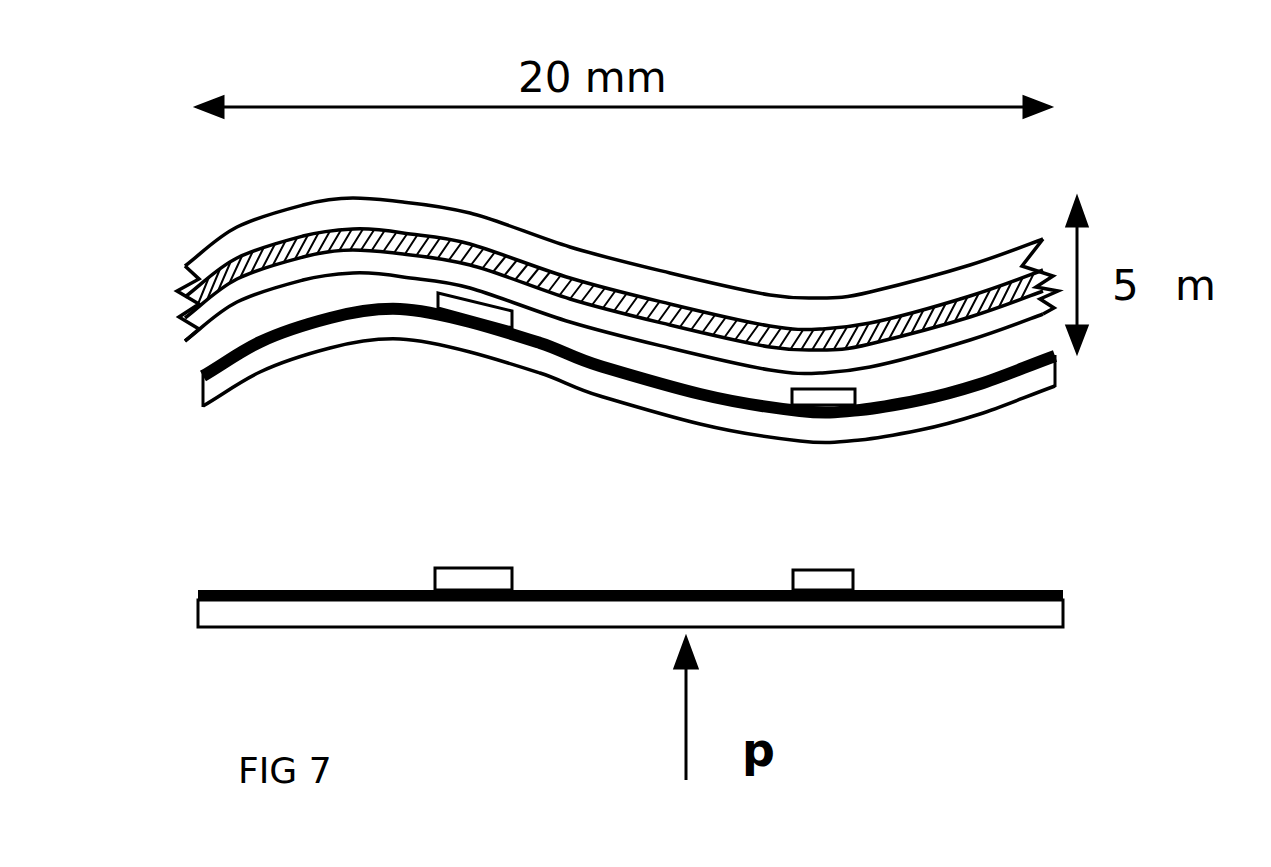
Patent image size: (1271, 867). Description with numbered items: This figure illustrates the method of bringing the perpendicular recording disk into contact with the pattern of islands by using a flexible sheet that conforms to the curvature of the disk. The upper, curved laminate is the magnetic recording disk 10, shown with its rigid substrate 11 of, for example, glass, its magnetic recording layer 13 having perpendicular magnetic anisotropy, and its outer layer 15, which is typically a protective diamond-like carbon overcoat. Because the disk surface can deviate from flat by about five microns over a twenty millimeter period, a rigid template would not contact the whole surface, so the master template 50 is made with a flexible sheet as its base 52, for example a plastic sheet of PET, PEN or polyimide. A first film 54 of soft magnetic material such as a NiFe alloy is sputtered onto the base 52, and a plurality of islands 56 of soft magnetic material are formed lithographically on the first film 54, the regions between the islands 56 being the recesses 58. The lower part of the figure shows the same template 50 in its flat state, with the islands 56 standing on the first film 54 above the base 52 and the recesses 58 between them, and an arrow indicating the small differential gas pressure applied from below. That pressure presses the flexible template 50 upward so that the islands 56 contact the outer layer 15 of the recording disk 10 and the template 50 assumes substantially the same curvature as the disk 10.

The magnetic recording disk 10 is at (480, 195).
The rigid substrate 11 is at (820, 297).
The magnetic recording layer 13 is at (712, 322).
The outer layer 15 is at (620, 325).
The master template 50 is at (181, 394).
The base 52 is at (970, 408).
The first film 54 is at (1055, 358).
The islands 56 is at (437, 297).
The recesses 58 is at (668, 364).